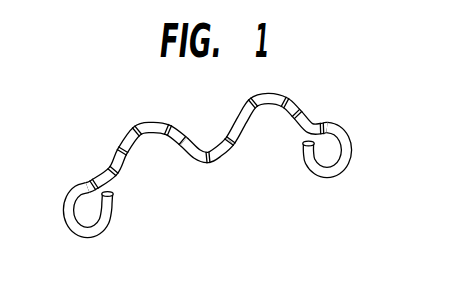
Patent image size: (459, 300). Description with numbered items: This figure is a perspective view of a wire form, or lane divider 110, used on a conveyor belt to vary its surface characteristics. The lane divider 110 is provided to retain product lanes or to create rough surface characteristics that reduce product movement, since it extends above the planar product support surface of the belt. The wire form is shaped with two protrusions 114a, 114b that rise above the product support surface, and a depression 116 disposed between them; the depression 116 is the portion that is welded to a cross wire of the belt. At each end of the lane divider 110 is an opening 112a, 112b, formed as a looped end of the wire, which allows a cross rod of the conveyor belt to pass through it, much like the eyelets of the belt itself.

The lane divider 110 is at (227, 158).
The opening 112a is at (89, 239).
The opening 112b is at (327, 178).
The protrusion 114a is at (147, 122).
The protrusion 114b is at (265, 94).
The depression 116 is at (208, 164).